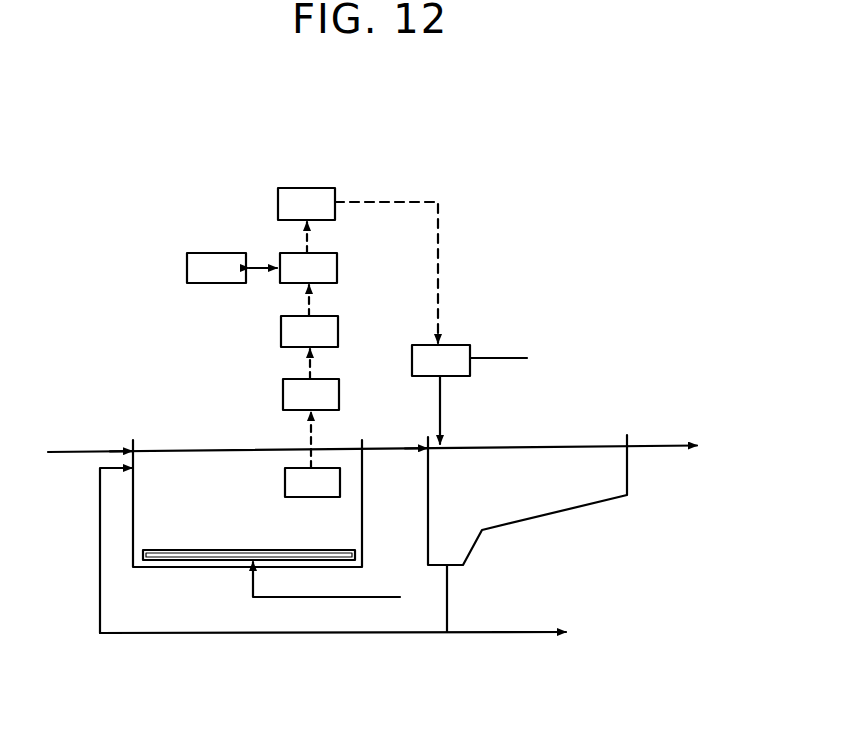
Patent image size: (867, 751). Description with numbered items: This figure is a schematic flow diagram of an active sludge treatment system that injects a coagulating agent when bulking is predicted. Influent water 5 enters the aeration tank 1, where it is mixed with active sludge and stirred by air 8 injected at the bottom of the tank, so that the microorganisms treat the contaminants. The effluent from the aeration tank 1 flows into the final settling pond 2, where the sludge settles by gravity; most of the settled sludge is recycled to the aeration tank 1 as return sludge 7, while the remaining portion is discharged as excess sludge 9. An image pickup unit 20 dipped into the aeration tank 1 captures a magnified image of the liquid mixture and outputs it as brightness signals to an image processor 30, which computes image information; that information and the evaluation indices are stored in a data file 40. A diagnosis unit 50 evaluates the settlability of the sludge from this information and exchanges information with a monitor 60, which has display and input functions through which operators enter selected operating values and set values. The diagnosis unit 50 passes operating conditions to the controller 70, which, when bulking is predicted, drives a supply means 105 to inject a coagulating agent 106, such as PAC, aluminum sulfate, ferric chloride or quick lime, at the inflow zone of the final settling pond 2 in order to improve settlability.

The aeration tank 1 is at (168, 568).
The final settling pond 2 is at (563, 510).
The influent water 5 is at (72, 451).
The return sludge 7 is at (225, 634).
The air 8 is at (393, 597).
The excess sludge 9 is at (515, 634).
The image pickup unit 20 is at (285, 483).
The image processor 30 is at (283, 393).
The data file 40 is at (281, 332).
The diagnosis unit 50 is at (337, 267).
The monitor 60 is at (187, 267).
The controller 70 is at (303, 188).
The supply means 105 is at (470, 368).
The coagulating agent 106 is at (512, 358).